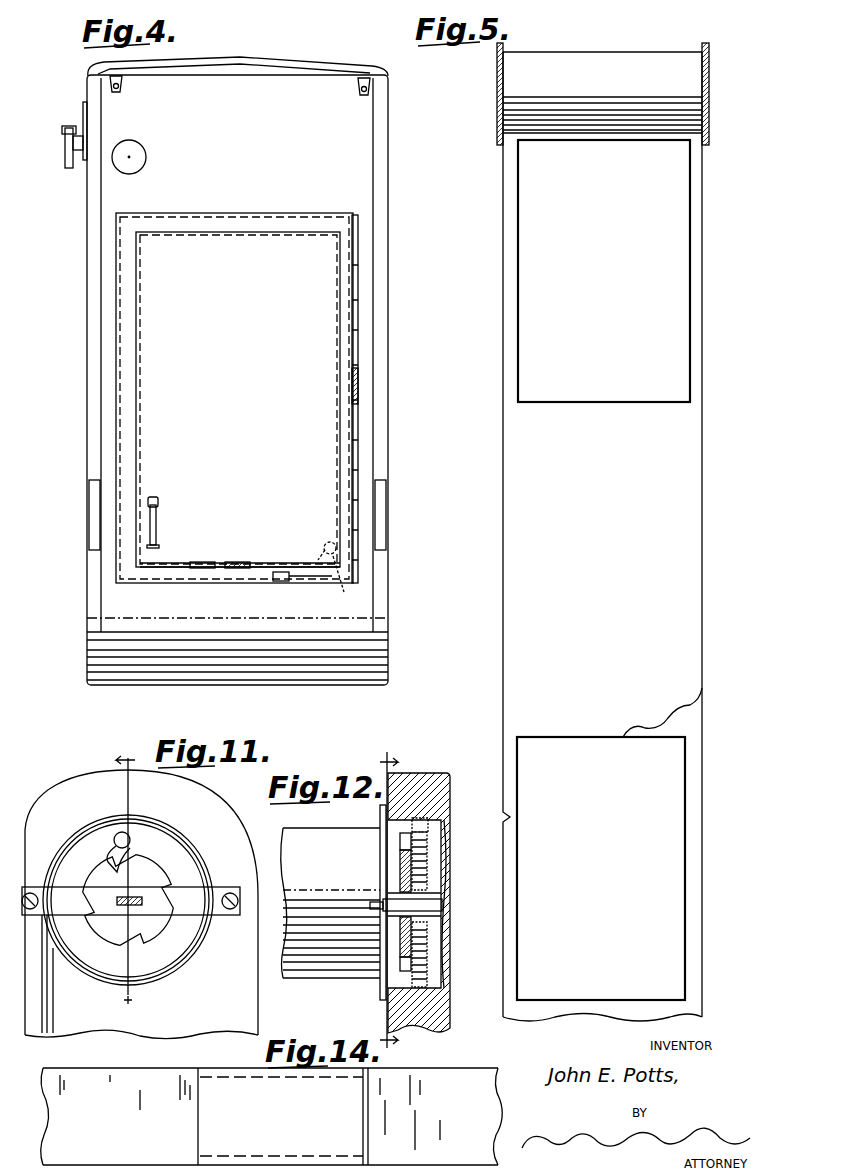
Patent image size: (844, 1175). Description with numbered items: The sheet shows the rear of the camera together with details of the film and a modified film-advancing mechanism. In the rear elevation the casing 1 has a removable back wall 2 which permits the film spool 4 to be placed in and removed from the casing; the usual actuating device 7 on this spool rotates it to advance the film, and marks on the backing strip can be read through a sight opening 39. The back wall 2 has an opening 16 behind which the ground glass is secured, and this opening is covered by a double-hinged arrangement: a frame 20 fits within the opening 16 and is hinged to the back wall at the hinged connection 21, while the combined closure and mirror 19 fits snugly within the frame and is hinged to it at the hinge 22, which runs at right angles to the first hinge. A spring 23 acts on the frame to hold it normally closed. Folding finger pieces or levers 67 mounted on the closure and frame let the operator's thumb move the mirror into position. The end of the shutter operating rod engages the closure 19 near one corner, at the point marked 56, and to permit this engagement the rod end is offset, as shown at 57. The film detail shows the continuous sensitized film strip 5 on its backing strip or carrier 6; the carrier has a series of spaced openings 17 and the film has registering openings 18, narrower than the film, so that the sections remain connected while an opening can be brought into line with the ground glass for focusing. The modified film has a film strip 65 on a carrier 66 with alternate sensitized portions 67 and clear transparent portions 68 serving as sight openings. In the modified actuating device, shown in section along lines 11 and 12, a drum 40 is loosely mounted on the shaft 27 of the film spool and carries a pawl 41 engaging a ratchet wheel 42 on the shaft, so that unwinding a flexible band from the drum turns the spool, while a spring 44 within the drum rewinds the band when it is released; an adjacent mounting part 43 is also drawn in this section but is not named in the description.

In FIG. 4, the casing 1 is at (86, 372).
In FIG. 11, the casing 1 is at (243, 1012).
In FIG. 12, the casing 1 is at (448, 1022).
In FIG. 4, the back wall 2 is at (318, 627).
In FIG. 5, the film spool 4 is at (710, 100).
In FIG. 12, the film spool 4 is at (380, 814).
In FIG. 5, the film strip 5 is at (668, 576).
In FIG. 5, the backing strip 6 is at (690, 835).
In FIG. 4, the actuating device 7 is at (62, 132).
In FIG. 12, the tracks 11 is at (394, 897).
In FIG. 11, the hinged front wall 12 is at (129, 880).
In FIG. 4, the opening 16 is at (152, 583).
In FIG. 5, the openings 17 is at (685, 878).
In FIG. 5, the openings 18 is at (545, 402).
In FIG. 4, the closure 19 is at (183, 240).
In FIG. 4, the frame 20 is at (268, 217).
In FIG. 4, the hinged connection 21 is at (356, 258).
In FIG. 4, the hinge 22 is at (202, 568).
In FIG. 4, the spring 23 is at (357, 390).
In FIG. 12, the shaft 27 is at (445, 906).
In FIG. 4, the sight opening 39 is at (146, 156).
In FIG. 11, the drum 40 is at (178, 863).
In FIG. 12, the drum 40 is at (412, 962).
In FIG. 11, the pawl 41 is at (112, 846).
In FIG. 12, the pawl 41 is at (405, 844).
In FIG. 11, the ratchet wheel 42 is at (147, 930).
In FIG. 12, the ratchet wheel 42 is at (400, 940).
In FIG. 11, the bracket bar 43 is at (48, 972).
In FIG. 12, the bracket bar 43 is at (425, 822).
In FIG. 12, the spring 44 is at (404, 862).
In FIG. 4, the engagement point 56 is at (326, 542).
In FIG. 4, the offset 57 is at (343, 593).
In FIG. 14, the film strip 65 is at (378, 1106).
In FIG. 14, the carrier 66 is at (283, 1073).
In FIG. 4, the sensitized portions 67 is at (157, 522).
In FIG. 14, the sensitized portions 67 is at (122, 1092).
In FIG. 14, the clear portions 68 is at (214, 1095).